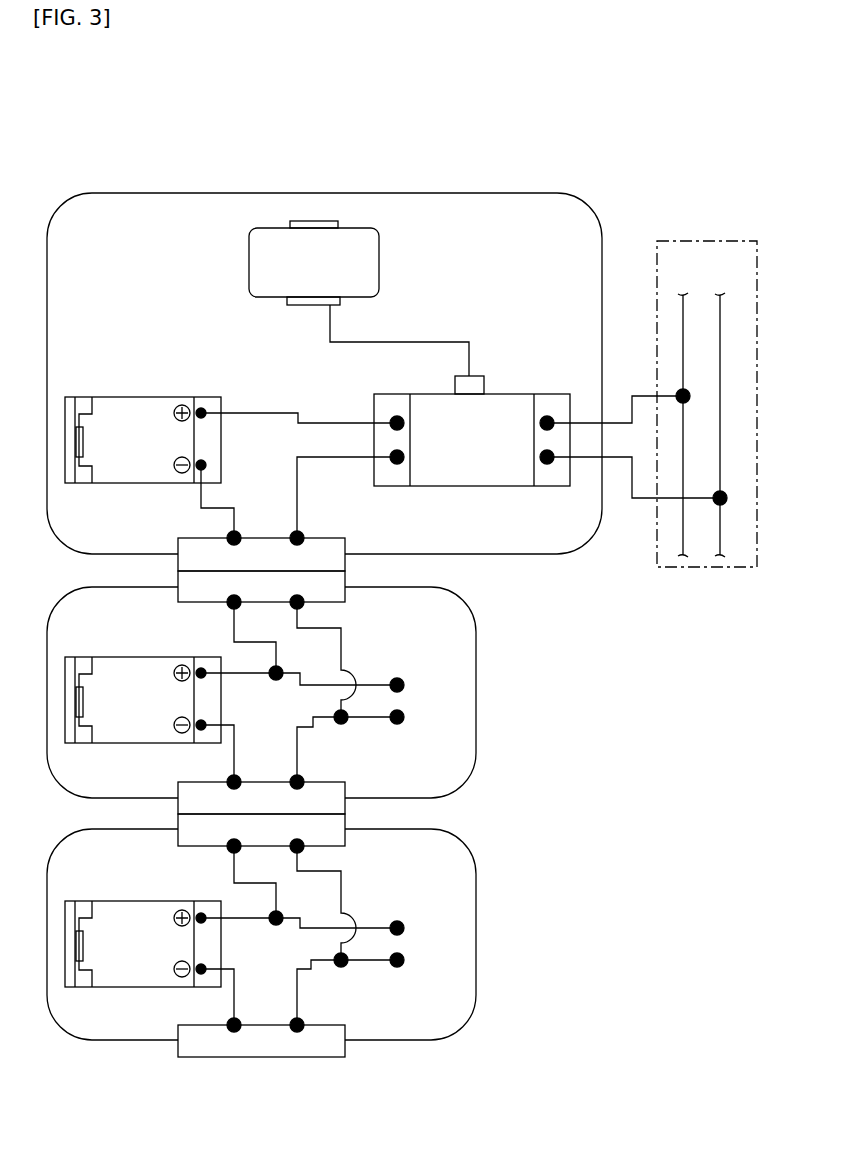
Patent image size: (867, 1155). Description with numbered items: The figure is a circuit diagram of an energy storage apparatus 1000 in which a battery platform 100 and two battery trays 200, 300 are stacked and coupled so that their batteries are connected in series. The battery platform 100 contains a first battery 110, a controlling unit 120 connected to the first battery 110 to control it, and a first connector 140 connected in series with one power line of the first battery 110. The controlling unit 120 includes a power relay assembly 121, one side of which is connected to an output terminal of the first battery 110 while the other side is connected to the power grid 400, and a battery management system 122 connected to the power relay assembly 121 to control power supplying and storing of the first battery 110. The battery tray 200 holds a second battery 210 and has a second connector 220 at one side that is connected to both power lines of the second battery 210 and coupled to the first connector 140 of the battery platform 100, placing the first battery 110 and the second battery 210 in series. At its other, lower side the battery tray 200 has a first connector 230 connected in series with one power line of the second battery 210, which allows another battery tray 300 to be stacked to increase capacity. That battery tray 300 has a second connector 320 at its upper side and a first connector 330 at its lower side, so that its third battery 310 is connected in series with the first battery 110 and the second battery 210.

The energy storage apparatus 1000 is at (168, 134).
The battery platform 100 is at (245, 193).
The controlling unit 120 is at (513, 135).
The battery management system 122 is at (379, 260).
The power relay assembly 121 is at (520, 394).
The first battery 110 is at (107, 483).
The first connector 140 is at (345, 560).
The battery tray 200 is at (476, 710).
The second connector 220 is at (345, 598).
The second battery 210 is at (101, 743).
The first connector 230 is at (345, 803).
The battery tray 300 is at (476, 950).
The second connector 320 is at (345, 845).
The third battery 310 is at (101, 987).
The first connector 330 is at (323, 1057).
The power grid 400 is at (677, 241).